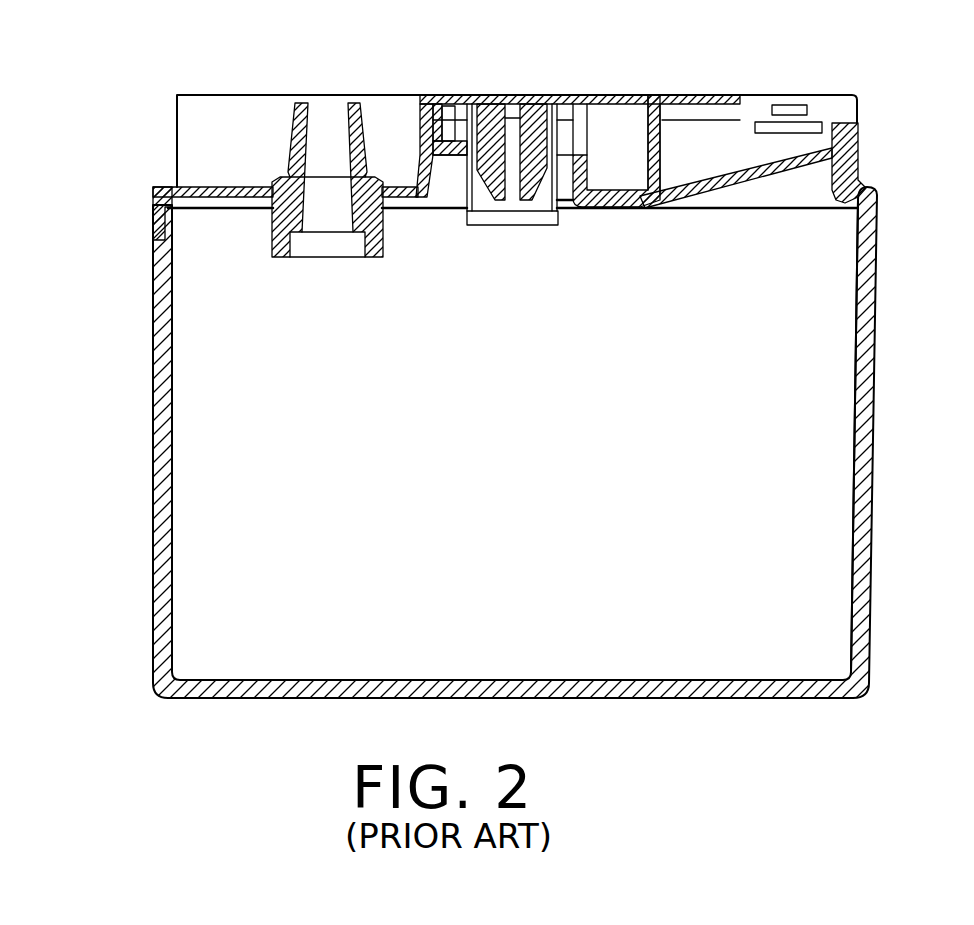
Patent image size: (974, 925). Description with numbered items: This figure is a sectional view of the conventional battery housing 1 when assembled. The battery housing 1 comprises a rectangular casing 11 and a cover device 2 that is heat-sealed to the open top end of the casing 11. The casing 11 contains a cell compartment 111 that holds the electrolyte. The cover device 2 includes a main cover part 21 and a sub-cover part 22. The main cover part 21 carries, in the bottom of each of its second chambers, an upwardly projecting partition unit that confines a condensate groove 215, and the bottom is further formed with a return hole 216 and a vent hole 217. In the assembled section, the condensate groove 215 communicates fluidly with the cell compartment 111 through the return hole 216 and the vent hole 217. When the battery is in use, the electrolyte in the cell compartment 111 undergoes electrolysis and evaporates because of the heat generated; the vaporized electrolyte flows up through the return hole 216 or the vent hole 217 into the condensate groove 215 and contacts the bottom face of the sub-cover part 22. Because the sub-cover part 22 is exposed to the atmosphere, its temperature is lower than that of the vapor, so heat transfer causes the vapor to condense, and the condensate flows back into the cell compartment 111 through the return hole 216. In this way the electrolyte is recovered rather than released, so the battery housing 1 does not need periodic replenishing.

The battery housing 1 is at (563, 363).
The casing 11 is at (561, 442).
The cell compartment 111 is at (830, 393).
The cover device 2 is at (549, 157).
The main cover part 21 is at (862, 150).
The sub-cover part 22 is at (753, 108).
The condensate groove 215 is at (688, 150).
The return hole 216 is at (614, 205).
The vent hole 217 is at (697, 188).